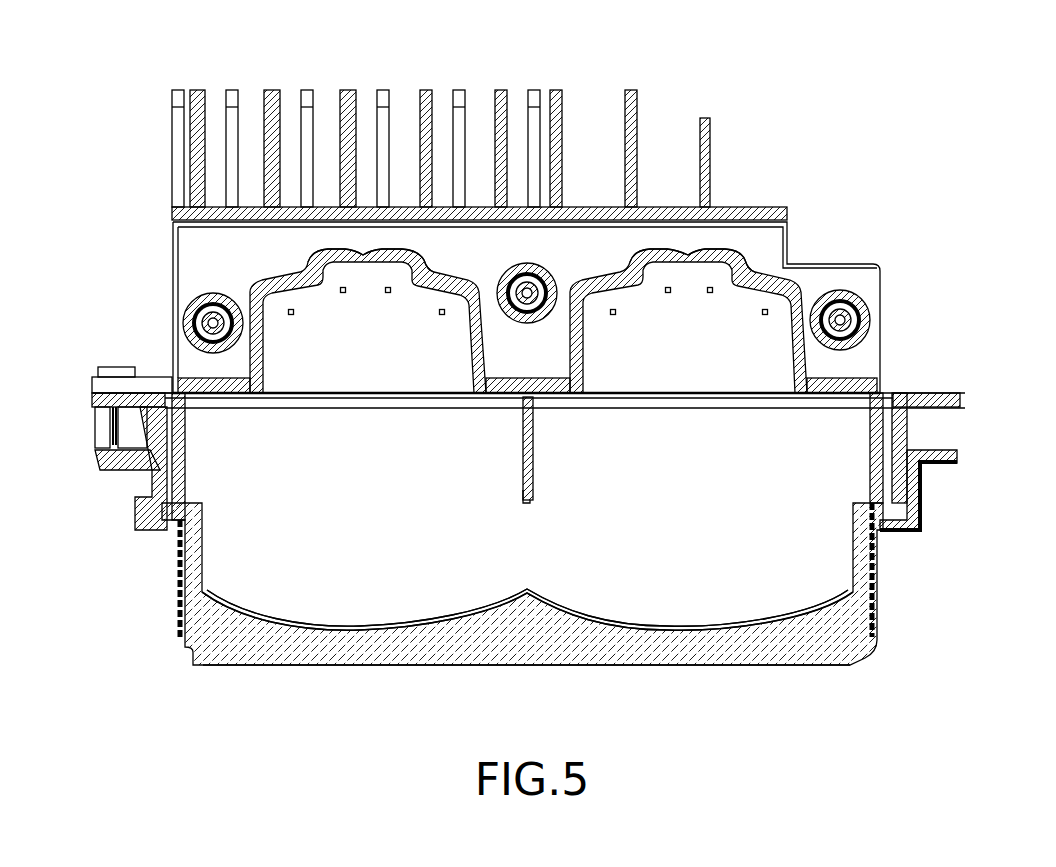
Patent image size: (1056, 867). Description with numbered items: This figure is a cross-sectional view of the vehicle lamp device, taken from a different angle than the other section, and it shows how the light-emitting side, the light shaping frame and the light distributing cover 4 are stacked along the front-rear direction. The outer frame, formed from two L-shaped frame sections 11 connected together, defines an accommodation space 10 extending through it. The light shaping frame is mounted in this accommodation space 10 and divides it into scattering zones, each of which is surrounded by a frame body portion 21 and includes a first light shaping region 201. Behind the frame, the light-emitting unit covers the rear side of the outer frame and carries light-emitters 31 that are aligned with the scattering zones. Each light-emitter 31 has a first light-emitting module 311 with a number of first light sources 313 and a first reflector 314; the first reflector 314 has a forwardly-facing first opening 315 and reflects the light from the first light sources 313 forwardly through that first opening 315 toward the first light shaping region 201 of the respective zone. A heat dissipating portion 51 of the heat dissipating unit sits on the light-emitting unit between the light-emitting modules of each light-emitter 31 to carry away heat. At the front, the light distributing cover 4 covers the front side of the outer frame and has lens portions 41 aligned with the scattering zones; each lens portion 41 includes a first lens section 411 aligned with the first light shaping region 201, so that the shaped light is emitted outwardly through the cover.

The light distributing cover 4 is at (868, 665).
The lens portion 41 is at (794, 668).
The first lens section 411 is at (290, 645).
The first light shaping region 201 is at (382, 540).
The frame body portion 21 is at (920, 507).
The accommodation space 10 is at (903, 397).
The frame section 11 is at (957, 400).
The light-emitter 31 is at (268, 274).
The first light-emitting module 311 is at (308, 270).
The first light source 313 is at (440, 313).
The first reflector 314 is at (257, 313).
The first opening 315 is at (360, 395).
The heat dissipating portion 51 is at (675, 218).